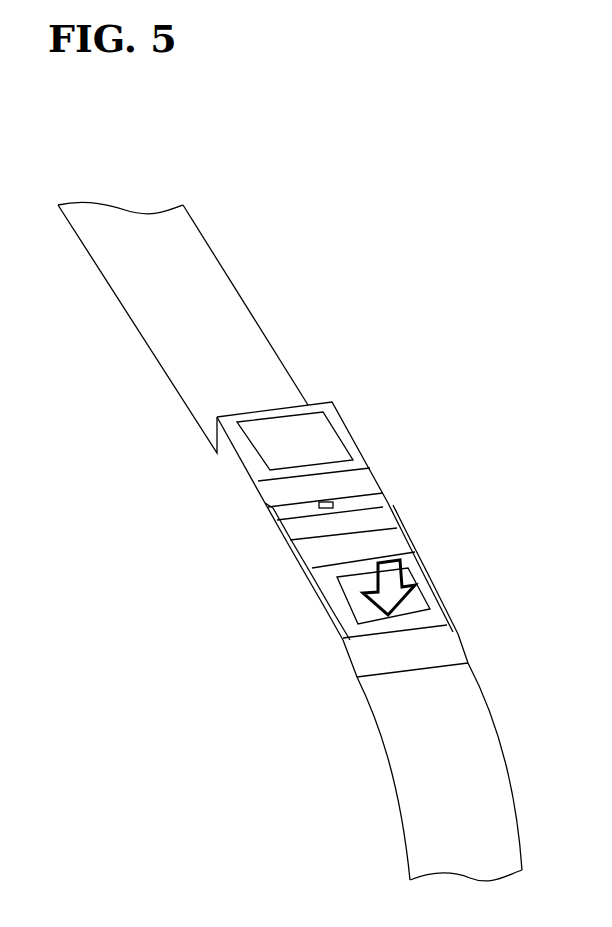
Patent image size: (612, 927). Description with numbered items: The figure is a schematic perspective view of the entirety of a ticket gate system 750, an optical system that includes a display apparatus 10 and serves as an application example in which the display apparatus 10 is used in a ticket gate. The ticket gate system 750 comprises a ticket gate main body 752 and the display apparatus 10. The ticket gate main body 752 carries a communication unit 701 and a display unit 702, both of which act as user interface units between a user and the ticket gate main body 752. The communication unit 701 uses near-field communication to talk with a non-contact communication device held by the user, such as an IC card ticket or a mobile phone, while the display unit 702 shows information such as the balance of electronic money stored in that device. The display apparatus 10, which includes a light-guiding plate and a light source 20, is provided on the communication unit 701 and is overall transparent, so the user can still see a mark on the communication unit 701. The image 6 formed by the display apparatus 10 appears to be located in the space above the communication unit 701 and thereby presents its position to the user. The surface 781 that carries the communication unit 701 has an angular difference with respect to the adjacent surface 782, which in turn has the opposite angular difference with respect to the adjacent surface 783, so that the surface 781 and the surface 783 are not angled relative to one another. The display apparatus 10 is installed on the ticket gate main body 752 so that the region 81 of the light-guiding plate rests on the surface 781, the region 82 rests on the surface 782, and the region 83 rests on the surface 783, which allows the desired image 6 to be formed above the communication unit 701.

The ticket gate system 750 is at (542, 76).
The ticket gate main body 752 is at (226, 273).
The display unit 702 is at (335, 424).
The light source 20 is at (300, 504).
The region 83 is at (398, 506).
The region 82 is at (417, 527).
The surface 783 is at (262, 536).
The surface 782 is at (287, 565).
The region 81 is at (314, 609).
The surface 781 is at (326, 651).
The communication unit 701 is at (434, 595).
The image 6 is at (360, 618).
The display apparatus 10 is at (451, 627).